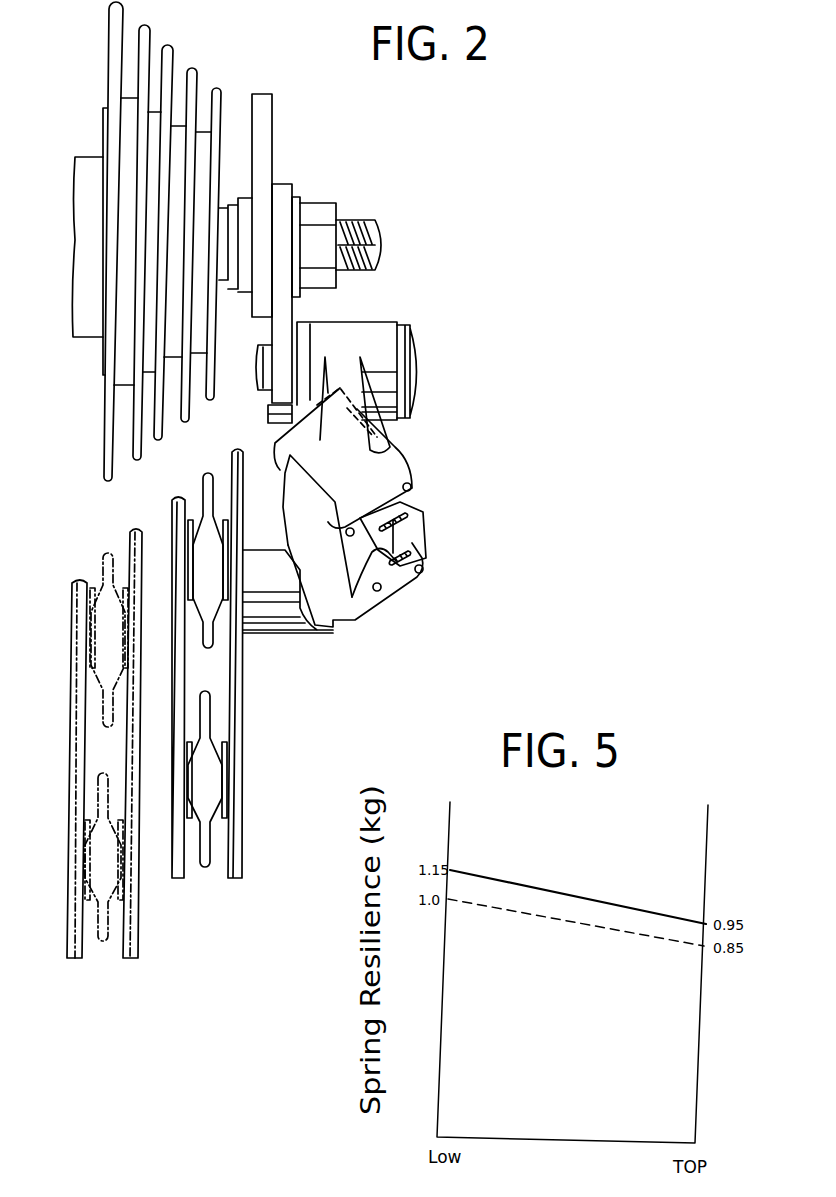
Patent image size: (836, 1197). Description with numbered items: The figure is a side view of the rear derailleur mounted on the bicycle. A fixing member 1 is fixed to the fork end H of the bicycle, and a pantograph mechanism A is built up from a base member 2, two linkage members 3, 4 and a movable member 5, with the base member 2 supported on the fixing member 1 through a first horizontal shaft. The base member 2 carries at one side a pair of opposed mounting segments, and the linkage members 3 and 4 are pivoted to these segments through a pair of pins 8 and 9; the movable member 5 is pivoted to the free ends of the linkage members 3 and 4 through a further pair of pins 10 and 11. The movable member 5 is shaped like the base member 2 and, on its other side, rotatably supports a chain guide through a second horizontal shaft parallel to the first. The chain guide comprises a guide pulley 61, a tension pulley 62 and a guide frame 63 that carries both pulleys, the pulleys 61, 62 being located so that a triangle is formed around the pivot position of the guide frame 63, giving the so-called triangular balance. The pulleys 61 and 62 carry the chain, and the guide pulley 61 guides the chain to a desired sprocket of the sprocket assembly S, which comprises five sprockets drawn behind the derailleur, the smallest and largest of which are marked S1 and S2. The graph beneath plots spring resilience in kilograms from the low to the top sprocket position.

The fork end H is at (273, 136).
The fixing member 1 is at (290, 316).
The base member 2 is at (382, 337).
The linkage member 3 is at (397, 442).
The linkage member 4 is at (290, 473).
The movable member 5 is at (340, 612).
The pin 8 is at (411, 487).
The pin 9 is at (354, 534).
The pin 10 is at (422, 572).
The pin 11 is at (379, 590).
The guide pulley 61 is at (216, 516).
The tension pulley 62 is at (215, 823).
The guide frame 63 is at (243, 752).
The pantograph mechanism A is at (397, 437).
The sprocket assembly S is at (103, 382).
The smallest sprocket S1 is at (210, 375).
The largest sprocket S2 is at (102, 457).